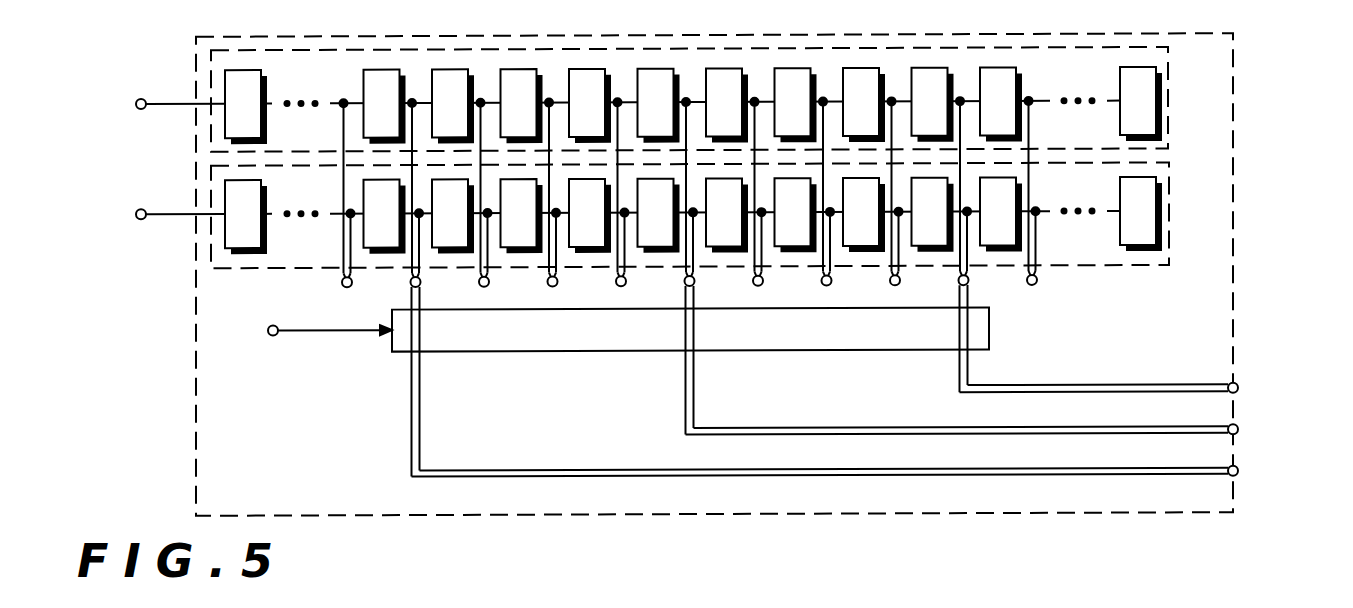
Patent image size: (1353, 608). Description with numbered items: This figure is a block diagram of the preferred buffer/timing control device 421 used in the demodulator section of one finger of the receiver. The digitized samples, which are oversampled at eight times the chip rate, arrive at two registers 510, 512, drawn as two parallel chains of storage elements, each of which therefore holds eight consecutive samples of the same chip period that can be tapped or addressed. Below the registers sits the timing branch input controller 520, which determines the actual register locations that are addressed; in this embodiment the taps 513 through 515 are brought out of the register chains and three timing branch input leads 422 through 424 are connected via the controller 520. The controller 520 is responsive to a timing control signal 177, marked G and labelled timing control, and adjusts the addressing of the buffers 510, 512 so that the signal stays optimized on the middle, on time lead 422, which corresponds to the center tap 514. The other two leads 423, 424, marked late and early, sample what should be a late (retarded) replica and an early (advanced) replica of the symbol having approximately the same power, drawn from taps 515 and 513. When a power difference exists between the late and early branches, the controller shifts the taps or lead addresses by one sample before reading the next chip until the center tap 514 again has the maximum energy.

The buffer/timing control device 421 is at (1234, 101).
The register 510 is at (1168, 102).
The register 512 is at (1170, 222).
The timing branch input controller 520 is at (989, 328).
The timing control signal 177 is at (345, 329).
The tap 515 is at (420, 287).
The center tap 514 is at (694, 287).
The tap 513 is at (968, 287).
The timing branch input lead 424 is at (1190, 386).
The on time lead 422 is at (1193, 428).
The timing branch input lead 423 is at (1190, 469).